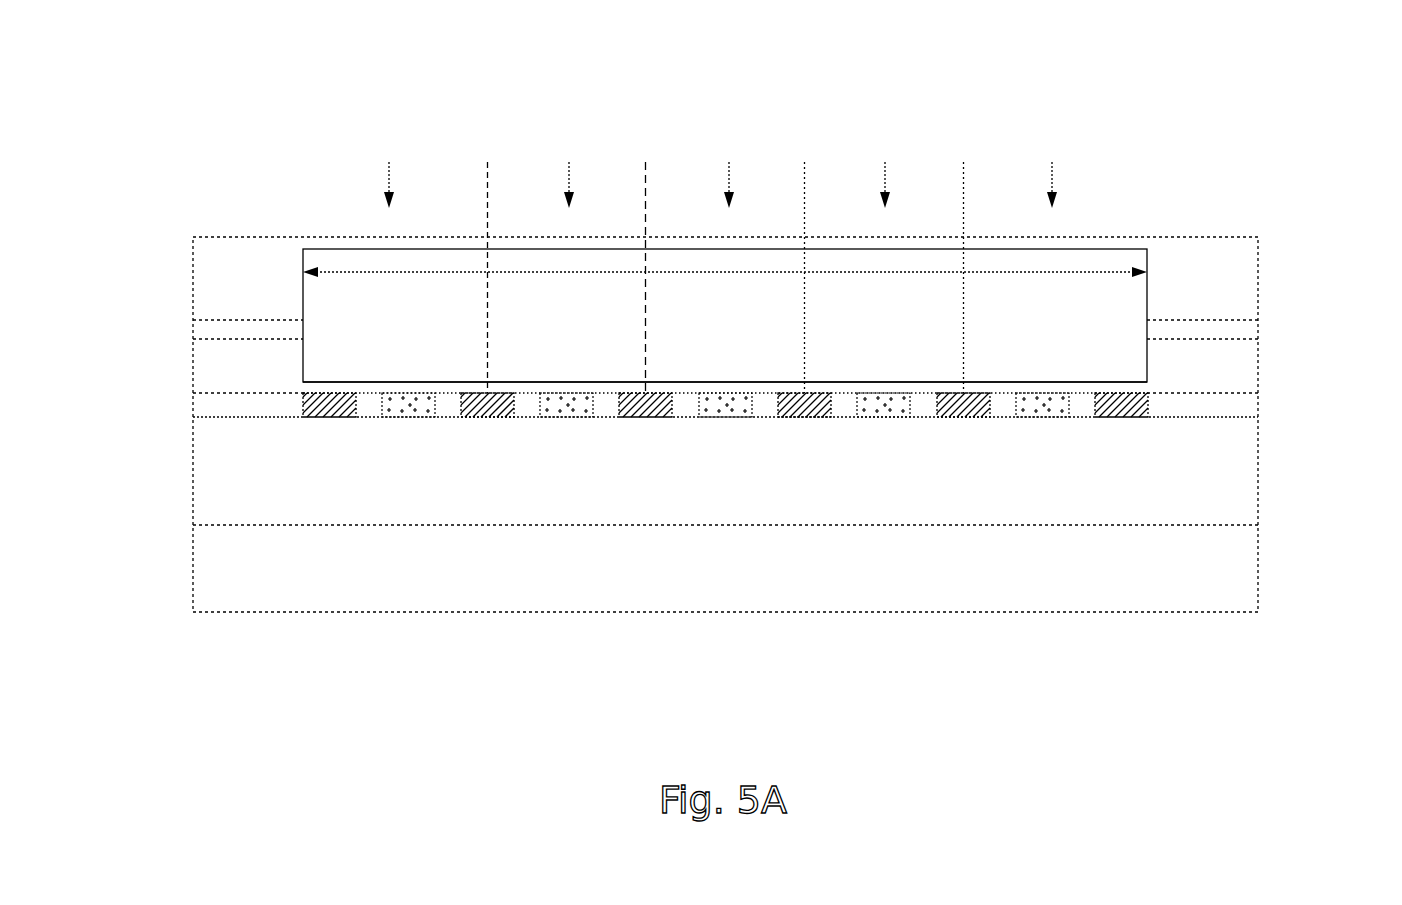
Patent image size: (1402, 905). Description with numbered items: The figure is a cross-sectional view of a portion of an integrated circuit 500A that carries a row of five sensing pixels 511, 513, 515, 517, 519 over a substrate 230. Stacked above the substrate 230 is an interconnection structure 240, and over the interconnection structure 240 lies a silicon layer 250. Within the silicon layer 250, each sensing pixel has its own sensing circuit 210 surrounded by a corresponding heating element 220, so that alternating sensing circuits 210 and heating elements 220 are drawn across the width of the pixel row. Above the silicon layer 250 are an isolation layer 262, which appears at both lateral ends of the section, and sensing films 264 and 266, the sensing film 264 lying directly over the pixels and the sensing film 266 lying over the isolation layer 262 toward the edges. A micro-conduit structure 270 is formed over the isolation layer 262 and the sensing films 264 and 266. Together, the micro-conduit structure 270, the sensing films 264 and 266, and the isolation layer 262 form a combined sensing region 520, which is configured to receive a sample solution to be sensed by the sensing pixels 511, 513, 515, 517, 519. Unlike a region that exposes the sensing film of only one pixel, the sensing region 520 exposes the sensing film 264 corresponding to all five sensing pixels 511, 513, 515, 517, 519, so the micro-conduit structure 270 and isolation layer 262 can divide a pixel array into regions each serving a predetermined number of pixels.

The integrated circuit 500A is at (1300, 100).
The sensing pixel 511 is at (389, 170).
The sensing pixel 513 is at (569, 170).
The sensing pixel 515 is at (729, 170).
The sensing pixel 517 is at (885, 170).
The sensing pixel 519 is at (1052, 170).
The sensing region 520 is at (725, 285).
The micro-conduit structure 270 is at (195, 267).
The sensing film 266 is at (235, 325).
The isolation layer 262 is at (269, 382).
The sensing film 264 is at (1097, 388).
The silicon layer 250 is at (1268, 393).
The heating element 220 is at (325, 417).
The sensing circuit 210 is at (403, 417).
The interconnection structure 240 is at (232, 482).
The substrate 230 is at (703, 582).